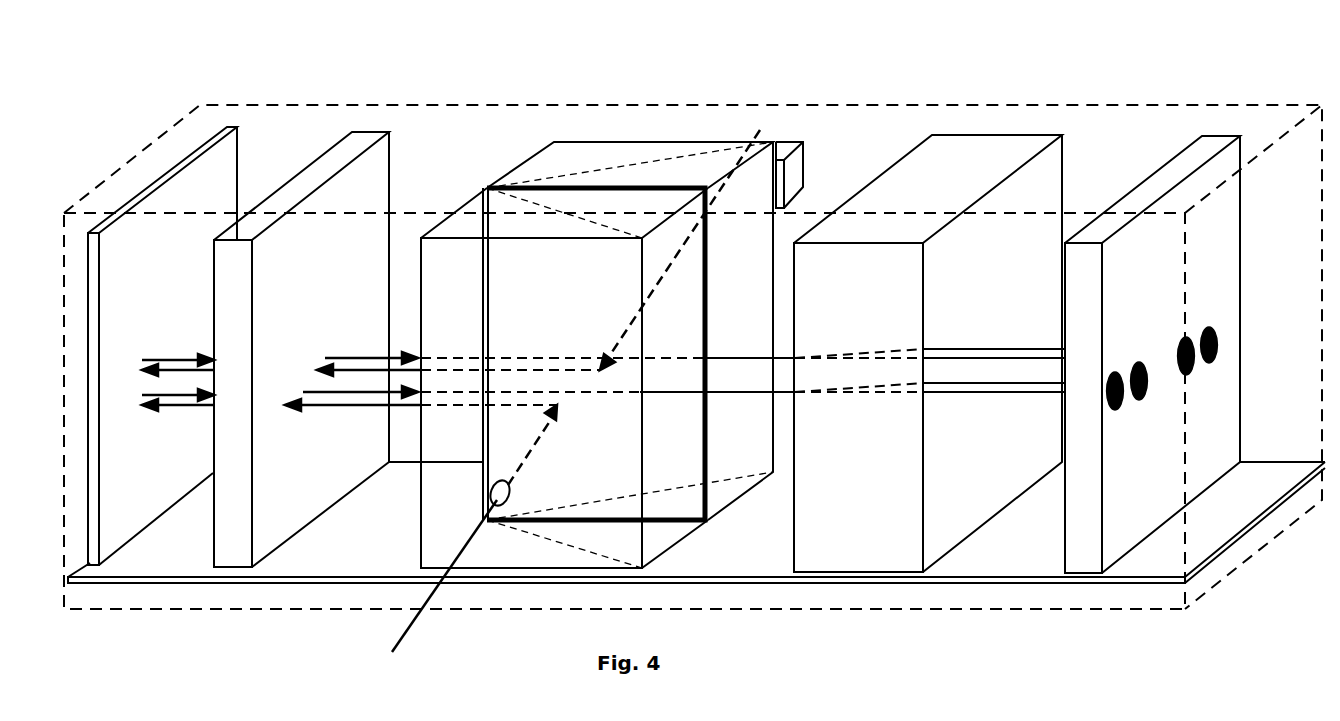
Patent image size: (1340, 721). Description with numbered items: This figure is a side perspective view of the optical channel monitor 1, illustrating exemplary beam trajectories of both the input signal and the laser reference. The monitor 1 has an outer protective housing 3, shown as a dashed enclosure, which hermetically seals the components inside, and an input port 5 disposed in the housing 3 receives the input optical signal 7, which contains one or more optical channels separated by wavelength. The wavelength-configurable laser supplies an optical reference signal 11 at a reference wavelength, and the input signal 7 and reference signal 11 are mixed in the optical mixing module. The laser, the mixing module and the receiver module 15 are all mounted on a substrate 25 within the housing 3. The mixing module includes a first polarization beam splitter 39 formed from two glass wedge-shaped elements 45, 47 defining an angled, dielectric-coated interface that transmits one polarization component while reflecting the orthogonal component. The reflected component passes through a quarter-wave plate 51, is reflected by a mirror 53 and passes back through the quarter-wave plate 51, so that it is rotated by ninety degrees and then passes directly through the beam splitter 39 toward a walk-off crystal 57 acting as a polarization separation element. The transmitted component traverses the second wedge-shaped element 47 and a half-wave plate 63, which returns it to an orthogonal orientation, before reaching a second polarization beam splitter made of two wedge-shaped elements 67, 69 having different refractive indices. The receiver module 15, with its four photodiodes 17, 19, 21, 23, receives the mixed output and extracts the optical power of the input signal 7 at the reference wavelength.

The optical channel monitor 1 is at (596, 55).
The outer protective housing 3 is at (407, 117).
The input port 5 is at (508, 489).
The input optical signal 7 is at (405, 632).
The optical reference signal 11 is at (742, 190).
The receiver module 15 is at (1192, 160).
The photodiode 17 is at (1112, 372).
The photodiode 19 is at (1140, 400).
The photodiode 21 is at (1183, 337).
The photodiode 23 is at (1210, 363).
The substrate 25 is at (123, 577).
The first polarization beam splitter 39 is at (660, 148).
The wedge-shaped element 45 is at (437, 233).
The wedge-shaped element 47 is at (620, 222).
The quarter-wave plate 51 is at (357, 145).
The mirror 53 is at (217, 132).
The walk-off crystal 57 is at (967, 157).
The half-wave plate 63 is at (487, 190).
The wedge-shaped element 67 is at (725, 157).
The wedge-shaped element 69 is at (581, 153).